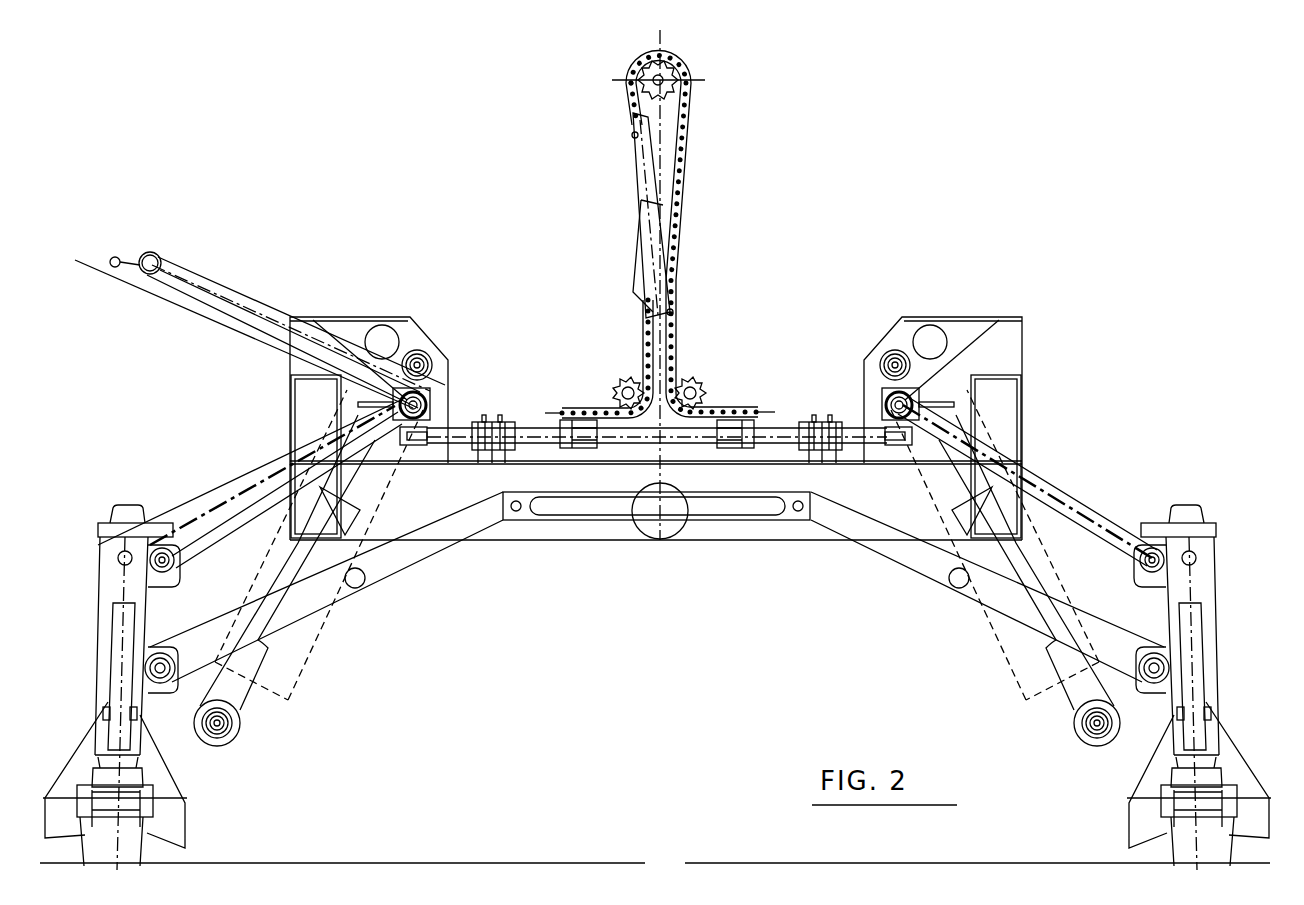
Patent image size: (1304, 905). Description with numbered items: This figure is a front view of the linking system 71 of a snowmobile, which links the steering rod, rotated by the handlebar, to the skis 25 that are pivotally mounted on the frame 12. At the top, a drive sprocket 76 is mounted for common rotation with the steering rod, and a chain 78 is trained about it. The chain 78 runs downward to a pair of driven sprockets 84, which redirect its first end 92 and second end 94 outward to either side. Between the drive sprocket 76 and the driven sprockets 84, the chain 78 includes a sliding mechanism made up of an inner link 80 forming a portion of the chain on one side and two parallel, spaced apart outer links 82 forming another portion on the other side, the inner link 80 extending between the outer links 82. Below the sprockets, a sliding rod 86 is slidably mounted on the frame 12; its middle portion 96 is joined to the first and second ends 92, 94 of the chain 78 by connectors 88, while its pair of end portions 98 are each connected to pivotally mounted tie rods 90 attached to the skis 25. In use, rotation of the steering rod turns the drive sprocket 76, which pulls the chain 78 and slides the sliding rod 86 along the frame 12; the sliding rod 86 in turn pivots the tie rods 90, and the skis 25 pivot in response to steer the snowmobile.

The frame 12 is at (1025, 328).
The skis 25 is at (137, 837).
The linking system 71 is at (482, 150).
The drive sprocket 76 is at (675, 76).
The chain 78 is at (680, 153).
The inner link 80 is at (640, 272).
The outer links 82 is at (637, 163).
The driven sprockets 84 is at (610, 387).
The sliding rod 86 is at (793, 425).
The connectors 88 is at (587, 448).
The tie rods 90 is at (220, 452).
The first end 92 is at (570, 407).
The second end 94 is at (757, 407).
The middle portion 96 is at (697, 443).
The end portions 98 is at (427, 447).